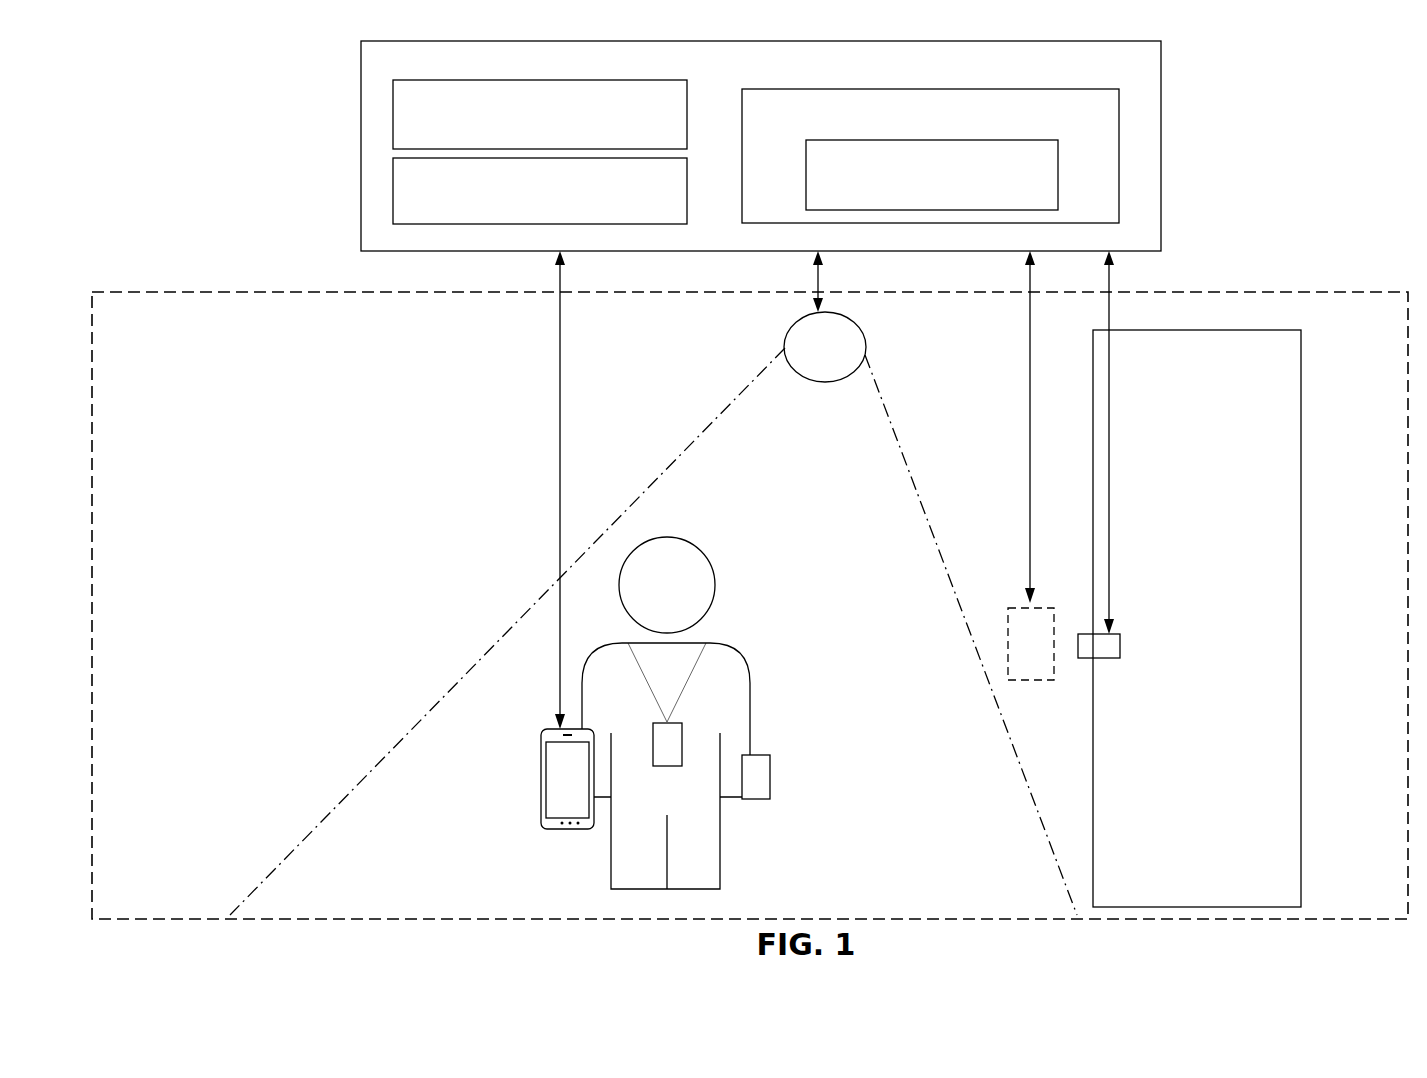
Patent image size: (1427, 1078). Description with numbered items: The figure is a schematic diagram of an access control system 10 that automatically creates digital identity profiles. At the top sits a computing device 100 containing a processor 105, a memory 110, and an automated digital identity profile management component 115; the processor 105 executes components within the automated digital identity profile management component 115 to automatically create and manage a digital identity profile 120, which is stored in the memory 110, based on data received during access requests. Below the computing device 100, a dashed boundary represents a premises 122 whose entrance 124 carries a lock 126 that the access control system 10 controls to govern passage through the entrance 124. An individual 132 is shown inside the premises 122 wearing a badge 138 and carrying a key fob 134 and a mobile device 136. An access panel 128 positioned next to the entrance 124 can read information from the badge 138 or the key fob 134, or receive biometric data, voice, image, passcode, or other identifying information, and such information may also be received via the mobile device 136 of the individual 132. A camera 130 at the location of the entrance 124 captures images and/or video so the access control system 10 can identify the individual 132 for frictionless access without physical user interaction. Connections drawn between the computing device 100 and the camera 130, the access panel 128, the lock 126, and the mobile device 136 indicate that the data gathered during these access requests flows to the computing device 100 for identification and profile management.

The access control system 10 is at (176, 100).
The computing device 100 is at (761, 146).
The processor 105 is at (540, 114).
The memory 110 is at (930, 156).
The automated digital identity profile management component 115 is at (540, 191).
The digital identity profile 120 is at (932, 175).
The premises 122 is at (1310, 290).
The entrance 124 is at (1302, 615).
The lock 126 is at (1102, 658).
The access panel 128 is at (1018, 607).
The camera 130 is at (821, 382).
The individual 132 is at (667, 538).
The key fob 134 is at (757, 800).
The mobile device 136 is at (552, 830).
The badge 138 is at (682, 740).